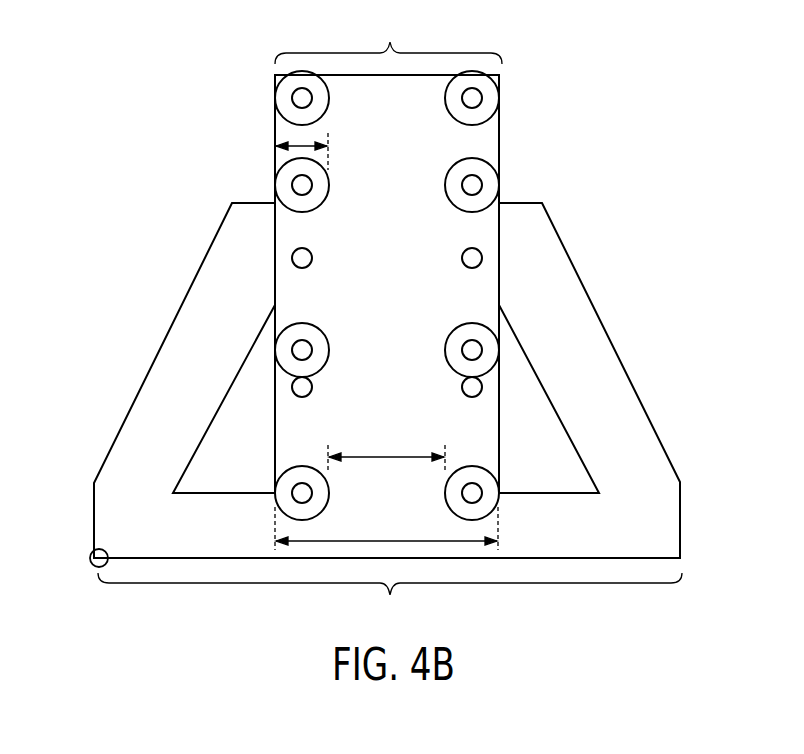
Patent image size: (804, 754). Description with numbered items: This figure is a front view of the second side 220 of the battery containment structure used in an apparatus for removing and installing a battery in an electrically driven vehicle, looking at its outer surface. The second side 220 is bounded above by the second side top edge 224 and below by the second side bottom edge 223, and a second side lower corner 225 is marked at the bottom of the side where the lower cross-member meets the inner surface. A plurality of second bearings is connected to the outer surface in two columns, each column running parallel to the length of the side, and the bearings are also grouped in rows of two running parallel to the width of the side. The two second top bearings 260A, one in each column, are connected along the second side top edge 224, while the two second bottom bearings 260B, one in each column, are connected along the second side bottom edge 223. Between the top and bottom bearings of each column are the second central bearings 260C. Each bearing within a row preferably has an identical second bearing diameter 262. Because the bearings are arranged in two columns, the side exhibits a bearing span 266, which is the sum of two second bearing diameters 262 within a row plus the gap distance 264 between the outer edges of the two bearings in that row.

The second side 220 is at (645, 82).
The second side bottom edge 223 is at (390, 602).
The second side top edge 224 is at (388, 37).
The second side lower corner 225 is at (90, 552).
The second top bearings 260A is at (282, 100).
The second bottom bearings 260B is at (283, 515).
The second central bearings 260C is at (447, 187).
The second bearing diameter 262 is at (302, 150).
The gap distance 264 is at (390, 458).
The bearing span 266 is at (378, 542).